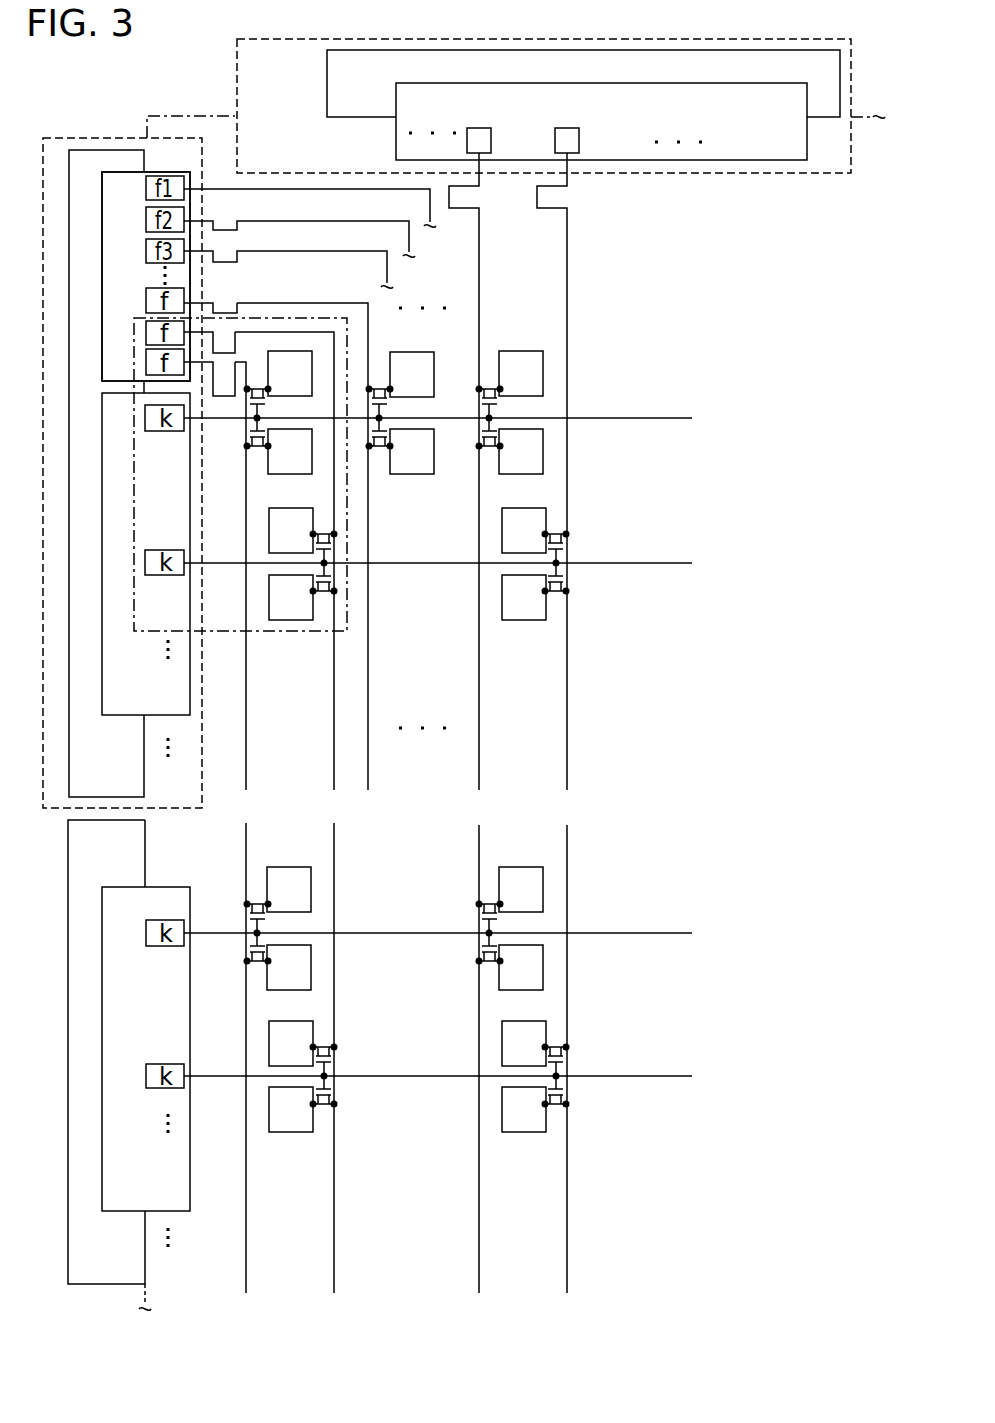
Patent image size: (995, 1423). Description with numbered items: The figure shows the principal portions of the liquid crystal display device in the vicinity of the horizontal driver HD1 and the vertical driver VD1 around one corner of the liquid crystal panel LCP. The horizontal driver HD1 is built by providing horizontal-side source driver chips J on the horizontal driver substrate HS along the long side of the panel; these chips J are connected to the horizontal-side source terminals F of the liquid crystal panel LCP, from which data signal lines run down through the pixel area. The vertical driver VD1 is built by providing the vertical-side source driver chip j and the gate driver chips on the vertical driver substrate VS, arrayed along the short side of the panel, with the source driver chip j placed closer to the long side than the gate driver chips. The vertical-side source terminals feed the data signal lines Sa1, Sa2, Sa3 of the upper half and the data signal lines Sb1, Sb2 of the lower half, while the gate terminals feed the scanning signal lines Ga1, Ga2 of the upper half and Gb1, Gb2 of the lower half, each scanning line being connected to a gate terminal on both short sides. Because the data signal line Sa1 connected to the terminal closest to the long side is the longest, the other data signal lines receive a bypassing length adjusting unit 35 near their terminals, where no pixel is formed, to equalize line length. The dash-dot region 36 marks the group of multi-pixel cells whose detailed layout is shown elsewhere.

The length adjusting unit 35 is at (222, 262).
The region 36 is at (283, 633).
The vertical driver substrate VS is at (80, 150).
The liquid crystal panel LCP is at (190, 116).
The vertical driver VD1 is at (146, 675).
The horizontal driver HD1 is at (544, 106).
The horizontal driver substrate HS is at (813, 118).
The horizontal-side source driver chip J is at (676, 162).
The vertical-side source driver chip j is at (102, 218).
The scanning signal line Ga1 is at (459, 418).
The scanning signal line Ga2 is at (459, 563).
The scanning signal line Gb1 is at (459, 934).
The scanning signal line Gb2 is at (459, 1076).
The data signal line Sa1 is at (245, 591).
The data signal line Sa2 is at (294, 576).
The data signal line Sa3 is at (317, 562).
The data signal line Sb1 is at (245, 1073).
The data signal line Sb2 is at (335, 1073).